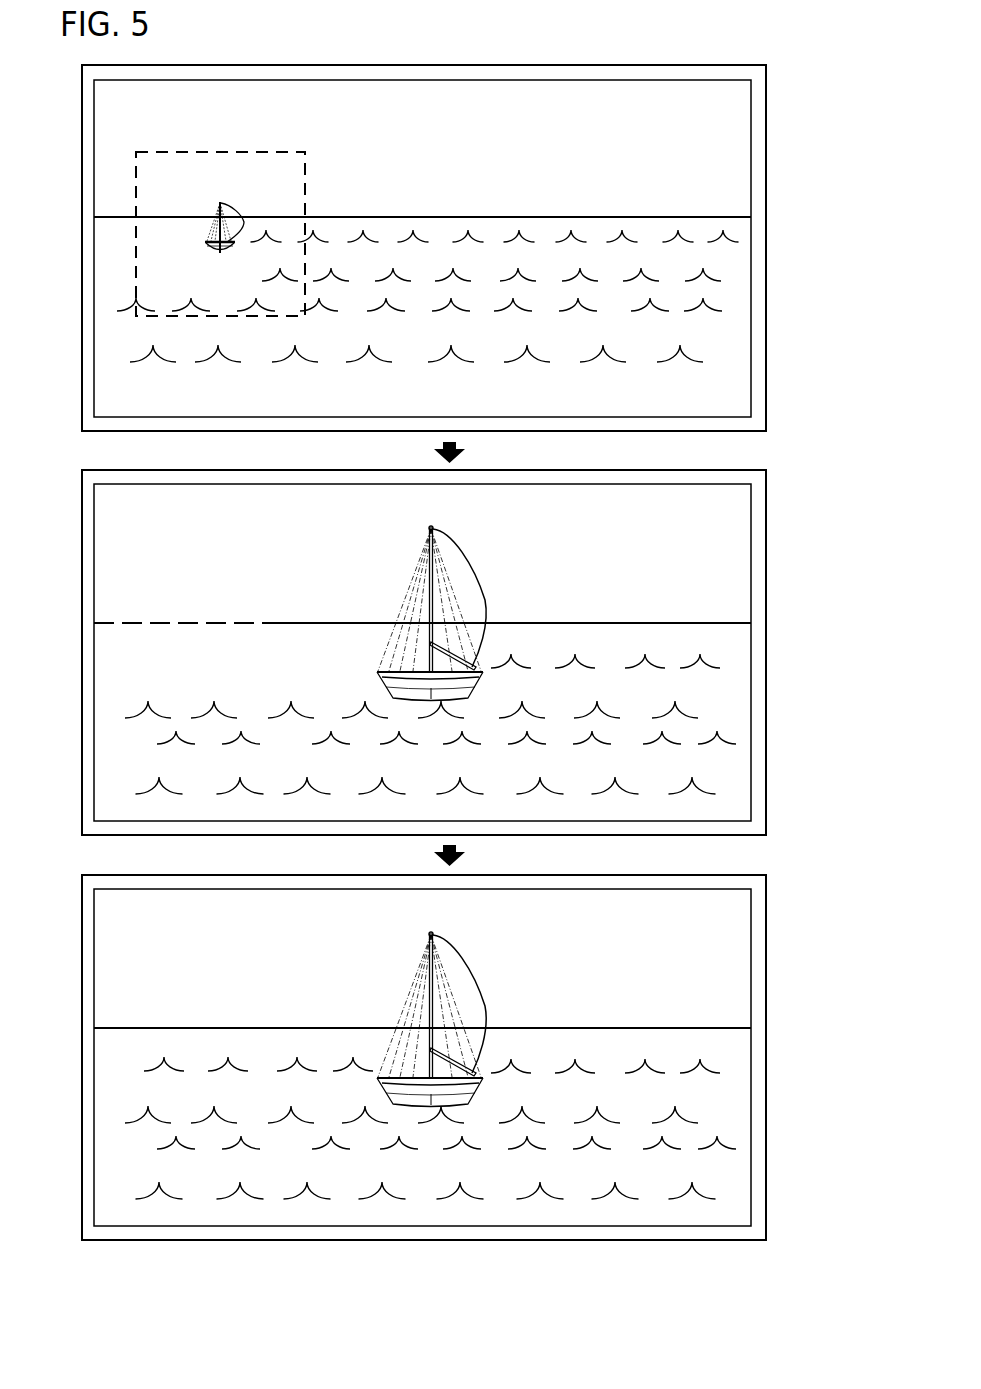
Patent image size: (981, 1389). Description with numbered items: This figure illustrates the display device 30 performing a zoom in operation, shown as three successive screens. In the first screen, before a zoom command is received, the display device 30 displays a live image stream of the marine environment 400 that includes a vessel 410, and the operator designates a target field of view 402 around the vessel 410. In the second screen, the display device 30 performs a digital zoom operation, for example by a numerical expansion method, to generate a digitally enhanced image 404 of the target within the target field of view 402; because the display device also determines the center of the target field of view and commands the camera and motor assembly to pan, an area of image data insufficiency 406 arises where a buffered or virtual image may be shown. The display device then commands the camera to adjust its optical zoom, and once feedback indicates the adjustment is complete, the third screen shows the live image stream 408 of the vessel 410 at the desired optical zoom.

The display device 30 is at (725, 65).
The live image stream of the marine environment 400 is at (735, 113).
The target field of view 402 is at (251, 152).
The digitally enhanced image 404 is at (735, 513).
The area of image data insufficiency 406 is at (157, 622).
The live image stream at the desired optical zoom 408 is at (735, 918).
The vessel 410 is at (228, 202).